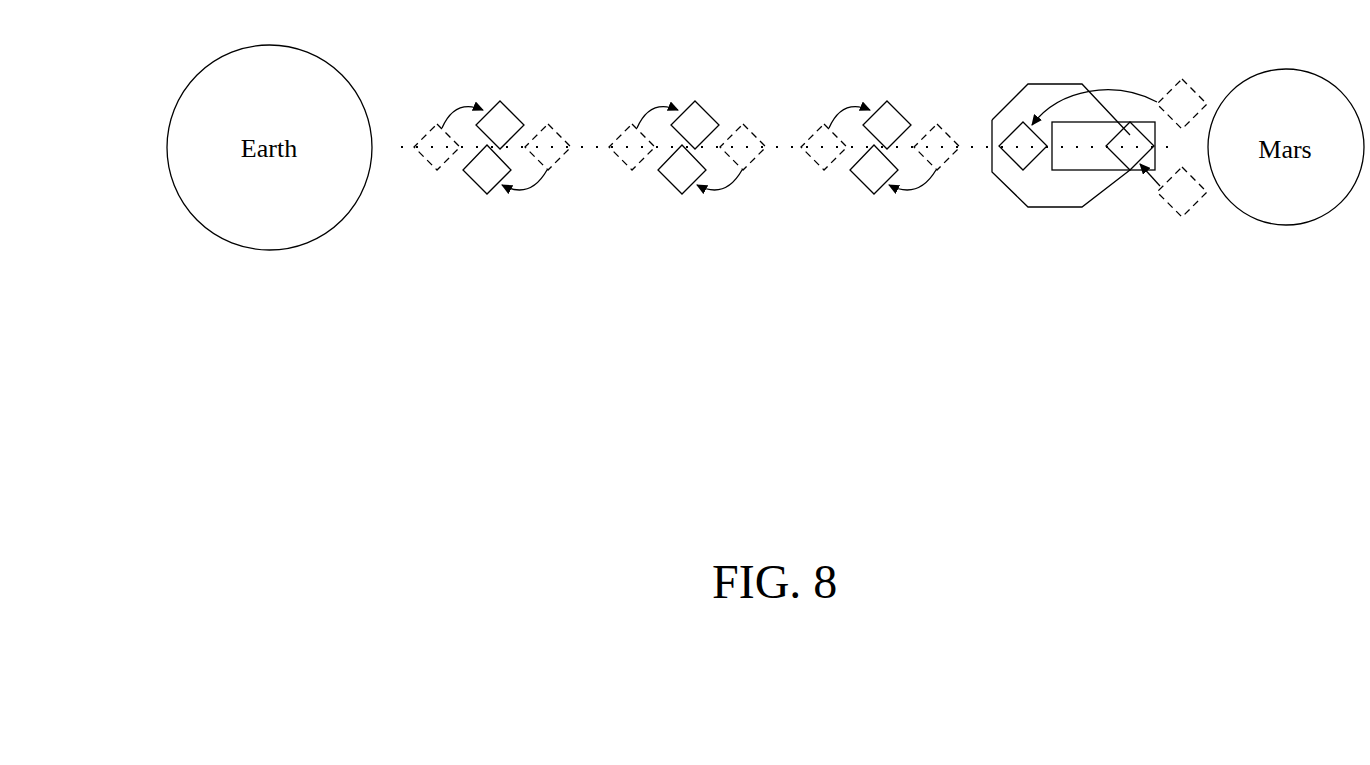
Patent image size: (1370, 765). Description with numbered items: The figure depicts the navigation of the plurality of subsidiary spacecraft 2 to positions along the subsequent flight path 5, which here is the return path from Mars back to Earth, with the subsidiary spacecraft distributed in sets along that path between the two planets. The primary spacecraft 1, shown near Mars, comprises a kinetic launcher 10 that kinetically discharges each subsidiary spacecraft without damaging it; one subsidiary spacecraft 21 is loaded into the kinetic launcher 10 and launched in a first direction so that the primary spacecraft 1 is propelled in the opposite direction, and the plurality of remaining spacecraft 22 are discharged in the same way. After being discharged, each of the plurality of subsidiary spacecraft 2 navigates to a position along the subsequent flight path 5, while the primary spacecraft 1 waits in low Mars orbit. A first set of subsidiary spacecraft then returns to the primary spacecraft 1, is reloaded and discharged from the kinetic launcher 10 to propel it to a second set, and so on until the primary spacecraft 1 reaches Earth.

The primary spacecraft 1 is at (1068, 88).
The plurality of subsidiary spacecraft 2 is at (687, 150).
The subsequent flight path 5 is at (777, 147).
The kinetic launcher 10 is at (1088, 165).
The subsidiary spacecraft 21 is at (1132, 135).
The plurality of remaining spacecraft 22 is at (1020, 125).